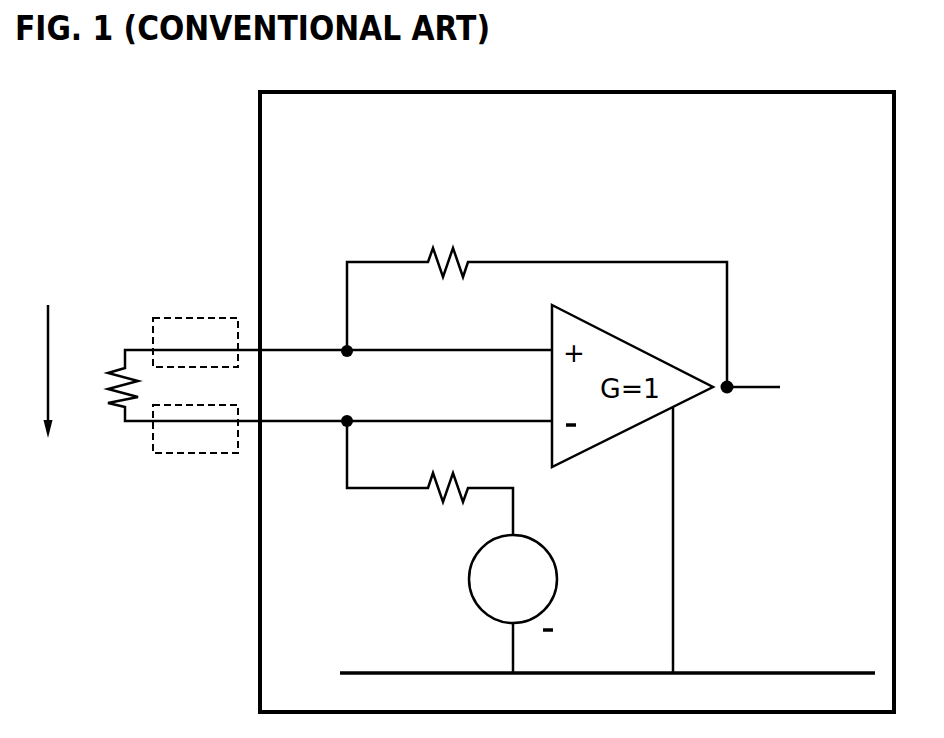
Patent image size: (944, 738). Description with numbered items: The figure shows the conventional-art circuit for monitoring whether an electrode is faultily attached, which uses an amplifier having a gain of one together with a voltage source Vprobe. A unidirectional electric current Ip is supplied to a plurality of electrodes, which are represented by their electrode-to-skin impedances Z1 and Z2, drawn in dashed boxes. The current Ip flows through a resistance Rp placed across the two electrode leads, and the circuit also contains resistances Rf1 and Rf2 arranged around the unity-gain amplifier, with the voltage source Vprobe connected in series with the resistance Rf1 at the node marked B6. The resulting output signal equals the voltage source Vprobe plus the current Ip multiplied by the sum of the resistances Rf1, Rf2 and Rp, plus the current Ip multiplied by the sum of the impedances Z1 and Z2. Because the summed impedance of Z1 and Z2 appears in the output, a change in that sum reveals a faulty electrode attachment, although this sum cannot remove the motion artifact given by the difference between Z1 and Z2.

The feedback resistor Rf1 (probe bias resistor) B6 is at (445, 478).
The resistance Rf1 is at (503, 457).
The resistance Rf2 is at (537, 296).
The resistance Rp is at (164, 385).
The impedance Z1 is at (195, 342).
The impedance Z2 is at (195, 429).
The voltage source Vprobe is at (461, 595).
The unidirectional electric current Ip is at (51, 396).